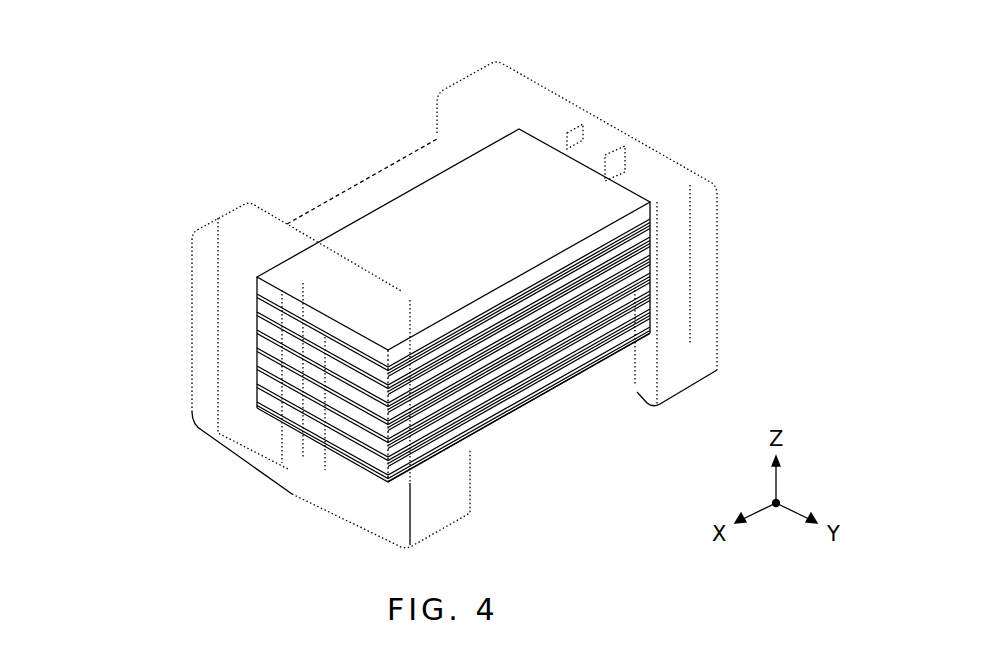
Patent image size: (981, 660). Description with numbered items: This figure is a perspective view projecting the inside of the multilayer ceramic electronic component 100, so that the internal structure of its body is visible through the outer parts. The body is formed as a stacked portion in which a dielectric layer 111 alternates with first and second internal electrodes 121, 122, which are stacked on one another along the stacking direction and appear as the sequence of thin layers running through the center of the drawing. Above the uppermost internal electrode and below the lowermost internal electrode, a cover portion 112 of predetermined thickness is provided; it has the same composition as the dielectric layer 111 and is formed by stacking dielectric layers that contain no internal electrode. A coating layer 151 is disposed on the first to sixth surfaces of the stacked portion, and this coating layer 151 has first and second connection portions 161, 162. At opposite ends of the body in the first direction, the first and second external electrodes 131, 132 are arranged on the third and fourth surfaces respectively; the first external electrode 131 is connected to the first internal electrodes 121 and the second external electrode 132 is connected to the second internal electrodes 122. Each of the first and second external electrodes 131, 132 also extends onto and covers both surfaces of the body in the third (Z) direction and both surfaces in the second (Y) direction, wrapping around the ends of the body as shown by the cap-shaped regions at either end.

The multilayer ceramic electronic component 100 is at (291, 64).
The dielectric layer 111 is at (656, 264).
The cover portion 112 is at (656, 203).
The first internal electrode 121 is at (656, 235).
The second internal electrode 122 is at (656, 297).
The first external electrode 131 is at (196, 314).
The second external electrode 132 is at (483, 88).
The coating layer 151 is at (345, 190).
The first connection portion 161 is at (284, 486).
The second connection portion 162 is at (590, 125).